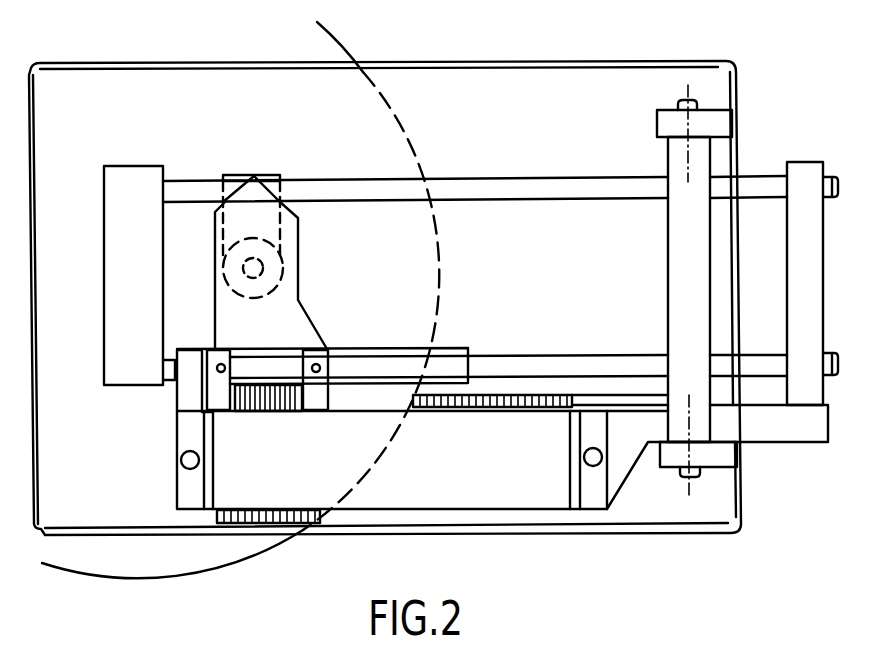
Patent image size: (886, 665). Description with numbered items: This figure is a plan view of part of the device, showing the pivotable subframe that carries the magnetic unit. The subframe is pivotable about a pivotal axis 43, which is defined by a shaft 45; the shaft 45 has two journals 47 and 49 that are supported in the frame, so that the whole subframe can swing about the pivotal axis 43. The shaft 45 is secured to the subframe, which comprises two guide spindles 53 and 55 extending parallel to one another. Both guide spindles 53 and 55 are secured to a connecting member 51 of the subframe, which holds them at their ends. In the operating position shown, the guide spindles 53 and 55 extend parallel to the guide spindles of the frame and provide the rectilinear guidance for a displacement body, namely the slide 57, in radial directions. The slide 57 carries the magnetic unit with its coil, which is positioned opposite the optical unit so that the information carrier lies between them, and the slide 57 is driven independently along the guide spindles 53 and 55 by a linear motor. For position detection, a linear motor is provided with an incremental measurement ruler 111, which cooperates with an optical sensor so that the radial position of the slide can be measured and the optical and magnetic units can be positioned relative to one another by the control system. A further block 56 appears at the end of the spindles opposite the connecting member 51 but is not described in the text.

The pivotal axis 43 is at (684, 84).
The shaft 45 is at (683, 230).
The journal 47 is at (697, 125).
The journal 49 is at (700, 458).
The connecting member 51 is at (150, 185).
The guide spindle 53 is at (487, 181).
The guide spindle 55 is at (522, 365).
The end support block 56 is at (800, 313).
The slide 57 is at (290, 235).
The incremental measurement ruler 111 is at (503, 412).